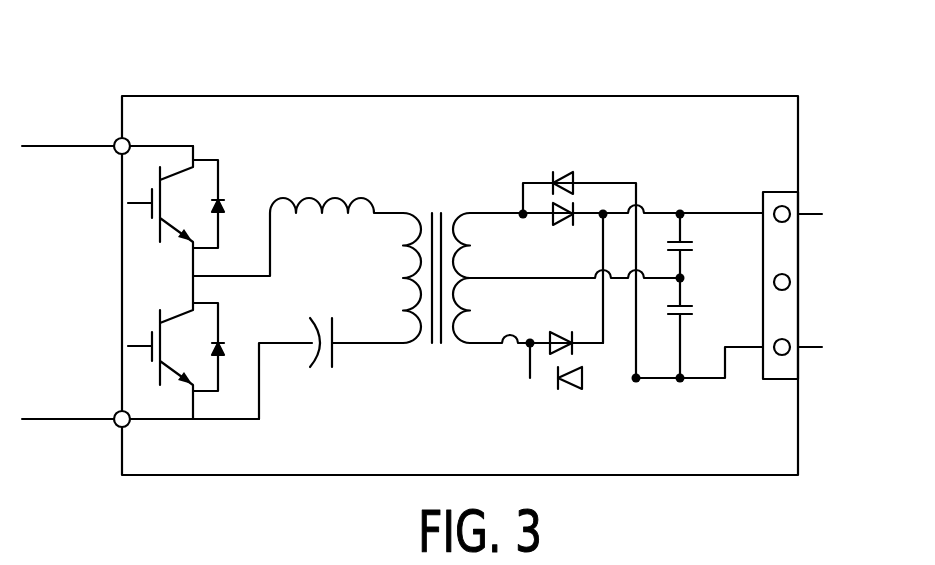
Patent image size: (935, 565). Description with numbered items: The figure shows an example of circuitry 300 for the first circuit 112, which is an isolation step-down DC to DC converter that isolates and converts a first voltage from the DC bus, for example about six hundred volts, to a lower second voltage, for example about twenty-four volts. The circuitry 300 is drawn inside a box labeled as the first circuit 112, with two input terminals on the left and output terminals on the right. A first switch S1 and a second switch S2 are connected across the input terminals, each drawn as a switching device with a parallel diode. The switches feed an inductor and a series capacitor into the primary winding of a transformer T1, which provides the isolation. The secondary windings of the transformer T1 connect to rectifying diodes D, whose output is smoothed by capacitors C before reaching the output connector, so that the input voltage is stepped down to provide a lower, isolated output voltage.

The circuitry 300 is at (113, 43).
The first circuit 112 is at (243, 96).
The first switch S1 is at (173, 211).
The second switch S2 is at (190, 347).
The transformer T1 is at (436, 263).
The diode D is at (566, 282).
The capacitor C is at (690, 296).